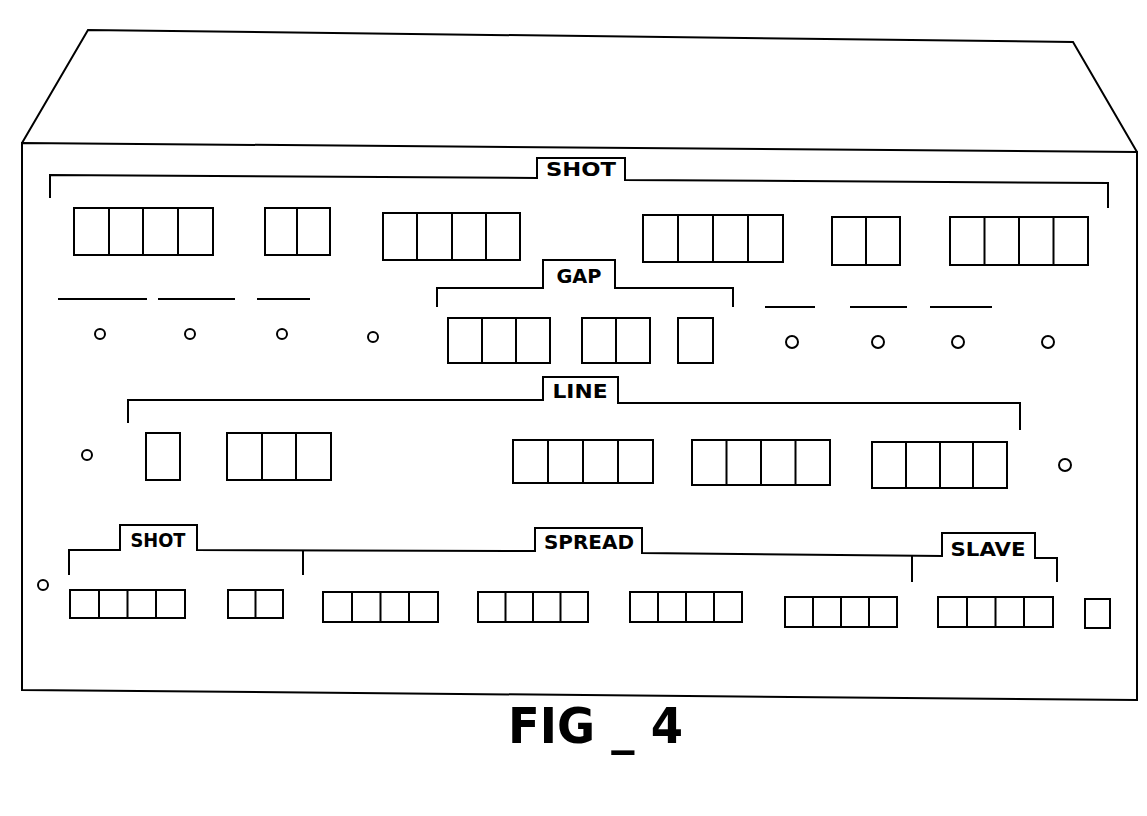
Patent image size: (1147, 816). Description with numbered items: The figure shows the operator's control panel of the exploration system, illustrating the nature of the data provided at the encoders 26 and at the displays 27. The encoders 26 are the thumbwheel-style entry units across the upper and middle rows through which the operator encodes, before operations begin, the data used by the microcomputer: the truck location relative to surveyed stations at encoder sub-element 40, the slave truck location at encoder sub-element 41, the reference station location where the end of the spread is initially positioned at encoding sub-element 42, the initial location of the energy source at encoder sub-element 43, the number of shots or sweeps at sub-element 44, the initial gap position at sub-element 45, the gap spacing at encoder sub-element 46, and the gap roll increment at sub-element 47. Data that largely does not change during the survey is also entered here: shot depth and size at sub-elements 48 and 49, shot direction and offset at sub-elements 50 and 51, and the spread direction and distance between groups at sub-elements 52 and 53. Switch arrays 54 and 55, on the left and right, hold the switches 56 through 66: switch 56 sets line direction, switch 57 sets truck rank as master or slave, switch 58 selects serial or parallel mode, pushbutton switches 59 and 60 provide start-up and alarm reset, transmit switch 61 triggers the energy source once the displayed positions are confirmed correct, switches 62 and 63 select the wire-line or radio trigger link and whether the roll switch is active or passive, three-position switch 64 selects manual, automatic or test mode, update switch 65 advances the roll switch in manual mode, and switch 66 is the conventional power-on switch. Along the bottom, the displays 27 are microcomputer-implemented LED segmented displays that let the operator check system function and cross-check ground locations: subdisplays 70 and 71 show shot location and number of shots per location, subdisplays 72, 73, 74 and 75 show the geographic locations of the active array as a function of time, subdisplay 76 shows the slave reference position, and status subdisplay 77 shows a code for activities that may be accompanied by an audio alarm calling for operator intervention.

The encoders 26 is at (1094, 138).
The displays 27 is at (886, 642).
The encoder sub-element 40 is at (523, 483).
The encoder sub-element 41 is at (720, 485).
The encoding sub-element 42 is at (885, 488).
The encoder sub-element 43 is at (205, 210).
The sub-element 44 is at (322, 210).
The sub-element 45 is at (508, 318).
The encoder sub-element 46 is at (623, 363).
The sub-element 47 is at (685, 363).
The sub-element 48 is at (500, 213).
The sub-element 49 is at (750, 215).
The sub-element 50 is at (893, 217).
The sub-element 51 is at (1072, 217).
The sub-element 52 is at (180, 458).
The sub-element 53 is at (265, 480).
The switch array 54 is at (54, 338).
The switch array 55 is at (1082, 347).
The switch 56 is at (106, 334).
The switch 57 is at (196, 334).
The switch 58 is at (288, 334).
The pushbutton switch 59 is at (379, 337).
The pushbutton switch 60 is at (82, 455).
The transmit switch 61 is at (38, 585).
The switch 62 is at (798, 342).
The switch 63 is at (884, 342).
The three-position switch 64 is at (952, 345).
The update switch 65 is at (1050, 348).
The power-on switch 66 is at (1071, 470).
The subdisplay 70 is at (173, 618).
The subdisplay 71 is at (267, 618).
The subdisplay 72 is at (400, 622).
The subdisplay 73 is at (550, 622).
The subdisplay 74 is at (695, 622).
The subdisplay 75 is at (840, 627).
The subdisplay 76 is at (972, 627).
The status subdisplay 77 is at (1097, 597).